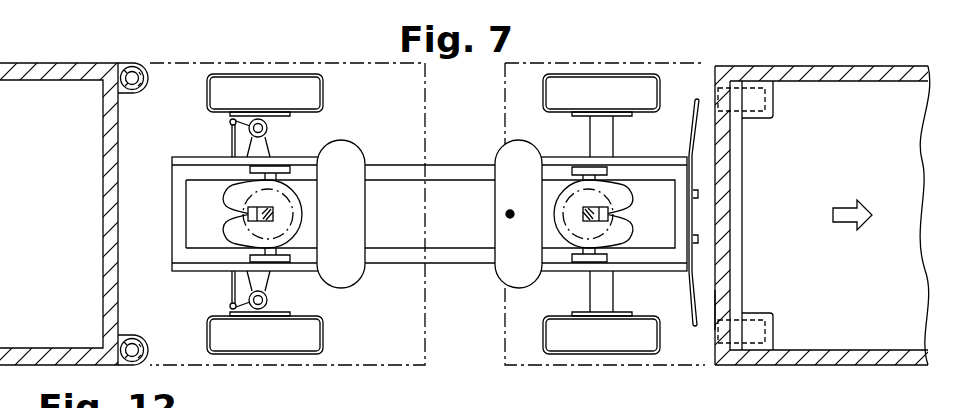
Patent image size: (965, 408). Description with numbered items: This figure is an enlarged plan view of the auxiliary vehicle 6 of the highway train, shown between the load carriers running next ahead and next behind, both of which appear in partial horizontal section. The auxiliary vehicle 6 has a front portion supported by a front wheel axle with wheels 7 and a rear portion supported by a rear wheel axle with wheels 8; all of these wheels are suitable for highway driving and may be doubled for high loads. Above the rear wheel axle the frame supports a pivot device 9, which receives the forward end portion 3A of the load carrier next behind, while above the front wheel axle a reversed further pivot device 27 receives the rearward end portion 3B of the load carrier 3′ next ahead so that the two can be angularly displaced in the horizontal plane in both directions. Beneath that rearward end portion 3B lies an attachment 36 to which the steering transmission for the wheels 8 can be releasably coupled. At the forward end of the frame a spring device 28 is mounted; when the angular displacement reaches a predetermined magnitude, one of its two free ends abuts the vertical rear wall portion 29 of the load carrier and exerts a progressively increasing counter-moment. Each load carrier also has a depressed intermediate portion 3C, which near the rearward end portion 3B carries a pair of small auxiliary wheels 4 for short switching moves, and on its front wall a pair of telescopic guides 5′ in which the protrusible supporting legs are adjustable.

The depressed intermediate portion 3C is at (74, 63).
The telescopic guides 5′ is at (147, 64).
The forward end portion 3A is at (343, 366).
The load carrier 3′ is at (695, 66).
The rearward end portion 3B is at (548, 366).
The auxiliary vehicle 6 is at (456, 156).
The pivot device 9 is at (288, 190).
The further pivot device 27 is at (565, 238).
The attachment 36 is at (510, 214).
The wheels 8 is at (261, 82).
The wheels 7 is at (597, 92).
The spring device 28 is at (693, 106).
The auxiliary wheels 4 is at (758, 80).
The vertical rear wall portion 29 is at (712, 302).